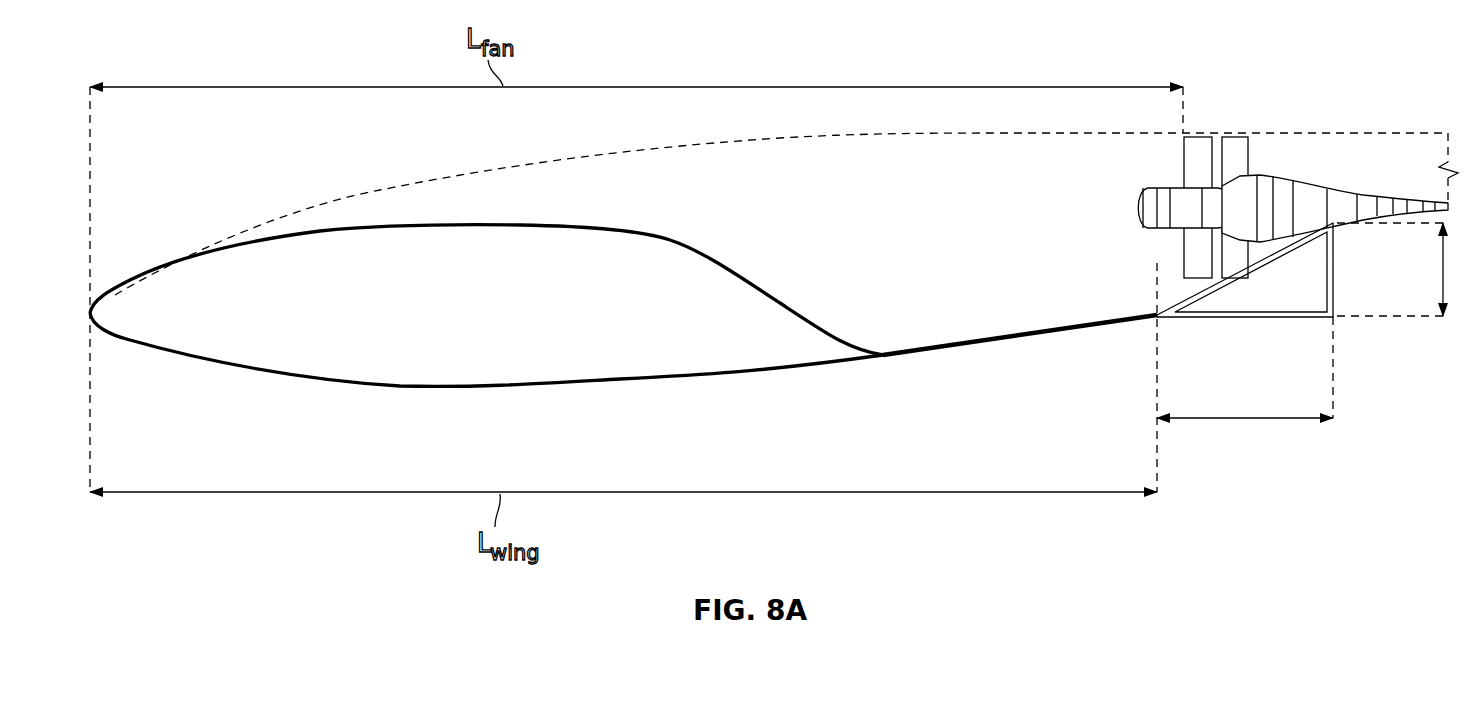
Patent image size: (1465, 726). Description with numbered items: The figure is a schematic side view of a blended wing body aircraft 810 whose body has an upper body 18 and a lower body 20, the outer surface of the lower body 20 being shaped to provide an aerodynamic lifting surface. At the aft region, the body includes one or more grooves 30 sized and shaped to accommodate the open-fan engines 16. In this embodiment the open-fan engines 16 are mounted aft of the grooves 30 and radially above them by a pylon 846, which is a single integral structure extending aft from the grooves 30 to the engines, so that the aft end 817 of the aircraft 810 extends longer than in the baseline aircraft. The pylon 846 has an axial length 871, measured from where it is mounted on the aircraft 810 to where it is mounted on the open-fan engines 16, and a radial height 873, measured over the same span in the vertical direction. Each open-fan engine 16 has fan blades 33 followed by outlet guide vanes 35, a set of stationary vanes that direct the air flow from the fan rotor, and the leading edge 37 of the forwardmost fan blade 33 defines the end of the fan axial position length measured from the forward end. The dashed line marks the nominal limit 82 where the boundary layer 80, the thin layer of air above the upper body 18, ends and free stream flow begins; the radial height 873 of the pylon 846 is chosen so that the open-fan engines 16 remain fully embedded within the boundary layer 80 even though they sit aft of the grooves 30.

The blended wing body aircraft 810 is at (193, 147).
The upper body 18 is at (515, 224).
The lower body 20 is at (340, 384).
The grooves 30 is at (846, 304).
The nominal limit 82 is at (853, 136).
The boundary layer 80 is at (931, 130).
The fan blades 33 is at (1195, 136).
The outlet guide vanes 35 is at (1240, 136).
The leading edge 37 is at (1185, 170).
The open-fan engines 16 is at (1290, 178).
The pylon 846 is at (1337, 270).
The radial height 873 is at (1440, 280).
The aft end 817 is at (1351, 334).
The axial length 871 is at (1258, 422).